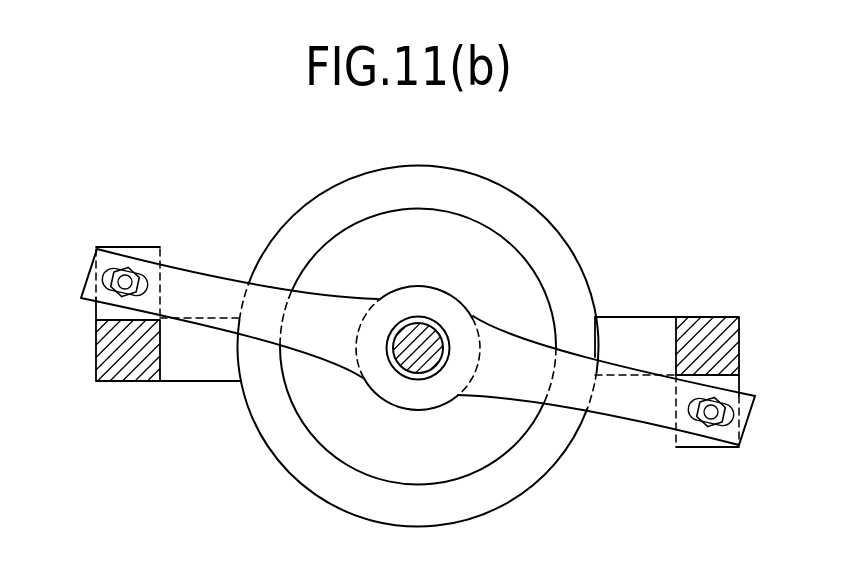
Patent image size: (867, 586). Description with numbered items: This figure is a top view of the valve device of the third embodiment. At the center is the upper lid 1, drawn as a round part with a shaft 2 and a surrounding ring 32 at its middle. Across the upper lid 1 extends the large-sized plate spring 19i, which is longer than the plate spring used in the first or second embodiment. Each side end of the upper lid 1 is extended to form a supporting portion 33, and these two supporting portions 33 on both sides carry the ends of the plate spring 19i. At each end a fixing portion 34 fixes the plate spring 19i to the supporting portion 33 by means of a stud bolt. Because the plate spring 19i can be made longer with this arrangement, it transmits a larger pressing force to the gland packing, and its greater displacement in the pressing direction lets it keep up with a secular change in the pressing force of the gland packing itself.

The upper lid 1 is at (432, 165).
The shaft 2 is at (418, 333).
The bushing 32 is at (440, 325).
The large-sized plate spring 19i is at (557, 408).
The supporting portion 33 is at (187, 381).
The fixing portion 34 is at (140, 248).